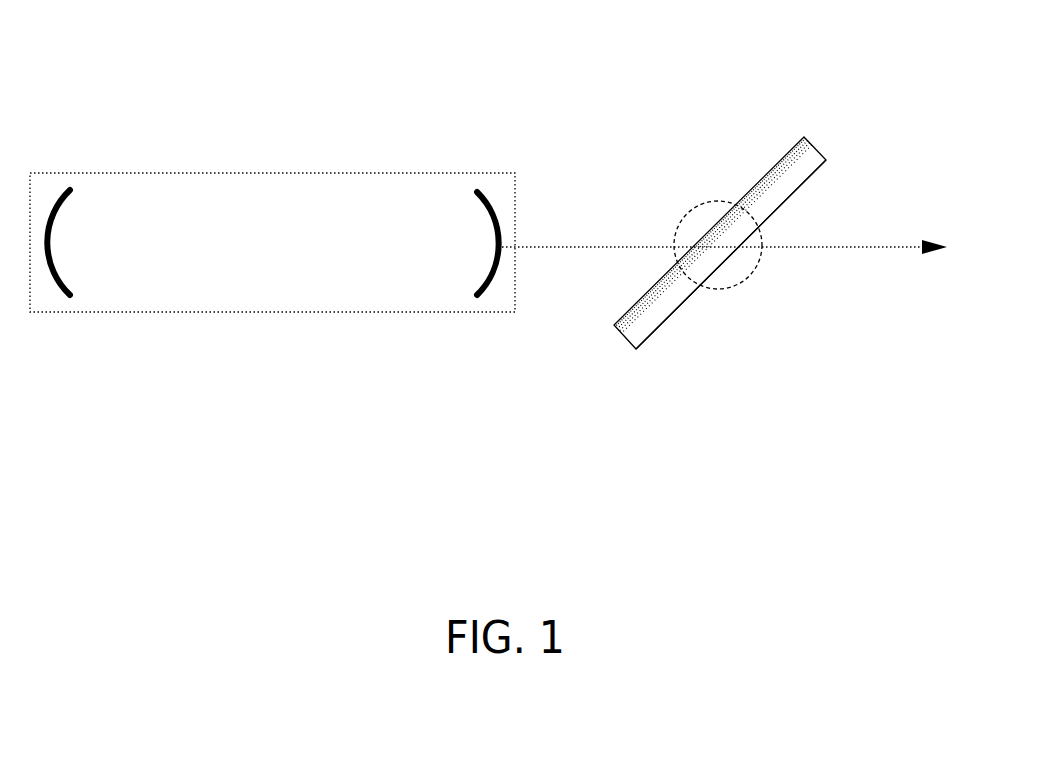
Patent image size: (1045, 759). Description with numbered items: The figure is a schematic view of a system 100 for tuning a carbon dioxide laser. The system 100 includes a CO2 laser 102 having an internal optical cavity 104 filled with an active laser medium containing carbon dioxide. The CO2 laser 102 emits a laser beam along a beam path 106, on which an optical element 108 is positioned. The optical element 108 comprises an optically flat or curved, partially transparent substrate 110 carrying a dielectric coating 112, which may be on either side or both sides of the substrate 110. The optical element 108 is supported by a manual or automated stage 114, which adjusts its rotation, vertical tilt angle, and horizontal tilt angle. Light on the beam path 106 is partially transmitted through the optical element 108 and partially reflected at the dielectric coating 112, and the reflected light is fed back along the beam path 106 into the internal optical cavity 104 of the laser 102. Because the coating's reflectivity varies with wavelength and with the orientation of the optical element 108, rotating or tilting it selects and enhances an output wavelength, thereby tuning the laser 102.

The system 100 is at (492, 52).
The CO2 laser 102 is at (273, 312).
The internal optical cavity 104 is at (65, 206).
The beam path 106 is at (722, 234).
The optical element 108 is at (745, 233).
The substrate 110 is at (665, 302).
The dielectric coating 112 is at (772, 170).
The stage 114 is at (755, 270).